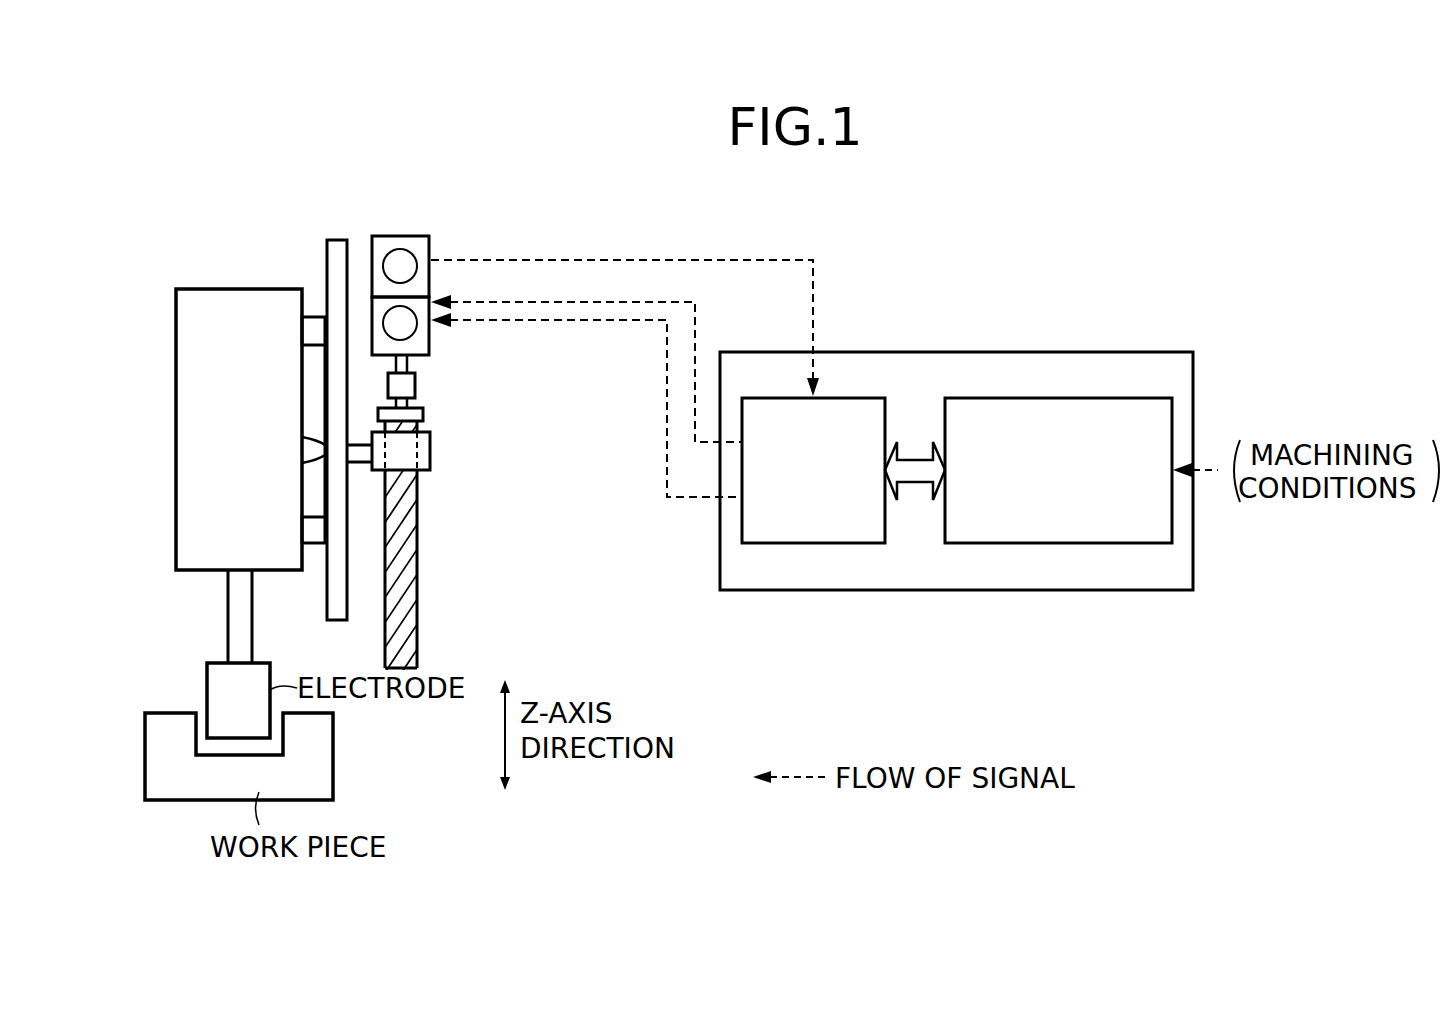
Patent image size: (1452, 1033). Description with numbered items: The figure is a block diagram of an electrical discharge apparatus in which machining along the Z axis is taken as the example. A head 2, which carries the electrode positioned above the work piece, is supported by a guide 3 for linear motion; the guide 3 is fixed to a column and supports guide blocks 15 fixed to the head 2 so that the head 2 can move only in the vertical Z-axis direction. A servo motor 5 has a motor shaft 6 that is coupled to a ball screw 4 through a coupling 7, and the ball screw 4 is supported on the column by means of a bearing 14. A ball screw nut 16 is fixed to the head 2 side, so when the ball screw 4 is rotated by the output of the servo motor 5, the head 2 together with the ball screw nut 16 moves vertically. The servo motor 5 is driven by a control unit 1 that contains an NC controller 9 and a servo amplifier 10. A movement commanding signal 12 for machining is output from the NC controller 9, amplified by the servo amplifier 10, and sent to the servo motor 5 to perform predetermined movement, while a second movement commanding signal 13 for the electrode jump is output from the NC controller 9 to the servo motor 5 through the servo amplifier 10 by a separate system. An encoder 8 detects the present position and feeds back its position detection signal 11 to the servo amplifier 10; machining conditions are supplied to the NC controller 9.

The control unit 1 is at (1112, 352).
The head 2 is at (205, 289).
The guide 3 is at (337, 240).
The ball screw 4 is at (418, 630).
The servo motor 5 is at (429, 352).
The motor shaft 6 is at (407, 368).
The coupling 7 is at (415, 390).
The encoder 8 is at (429, 248).
The NC controller 9 is at (1140, 397).
The servo amplifier 10 is at (862, 397).
The position detection signal 11 is at (736, 258).
The movement commanding signal 12 is at (698, 318).
The second movement commanding signal 13 is at (667, 484).
The bearing 14 is at (423, 415).
The guide blocks 15 is at (315, 323).
The ball screw nut 16 is at (430, 455).